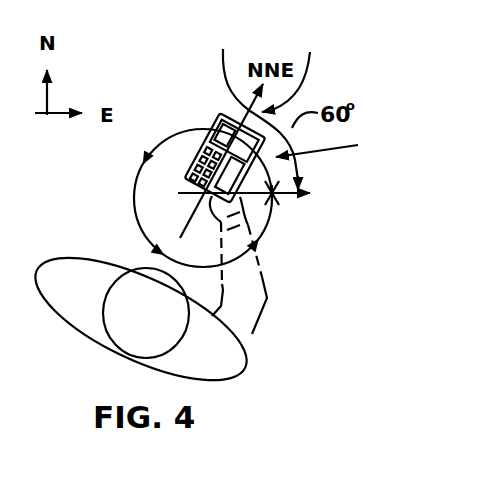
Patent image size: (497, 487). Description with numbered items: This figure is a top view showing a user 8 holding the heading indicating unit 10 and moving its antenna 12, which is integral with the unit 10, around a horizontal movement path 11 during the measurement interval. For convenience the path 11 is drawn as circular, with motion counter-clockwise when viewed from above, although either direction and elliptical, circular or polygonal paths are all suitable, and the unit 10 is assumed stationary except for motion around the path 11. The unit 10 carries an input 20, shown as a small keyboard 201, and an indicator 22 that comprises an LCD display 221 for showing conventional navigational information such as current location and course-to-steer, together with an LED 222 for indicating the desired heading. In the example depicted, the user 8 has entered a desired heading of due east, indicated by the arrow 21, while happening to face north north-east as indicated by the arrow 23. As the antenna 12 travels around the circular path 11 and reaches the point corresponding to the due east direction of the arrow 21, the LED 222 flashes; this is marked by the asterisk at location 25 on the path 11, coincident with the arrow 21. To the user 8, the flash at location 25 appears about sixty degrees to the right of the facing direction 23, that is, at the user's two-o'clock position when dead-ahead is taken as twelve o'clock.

The user 8 is at (194, 374).
The heading indicating unit 10 is at (191, 108).
The movement path 11 is at (148, 244).
The antenna 12 is at (211, 89).
The input 20 is at (171, 179).
The small keyboard 201 is at (157, 147).
The arrow indicating desired heading 21 is at (317, 201).
The indicator 22 is at (333, 145).
The LCD display 221 is at (300, 167).
The LED 222 is at (296, 73).
The arrow indicating facing direction 23 is at (254, 103).
The flash location 25 is at (279, 203).